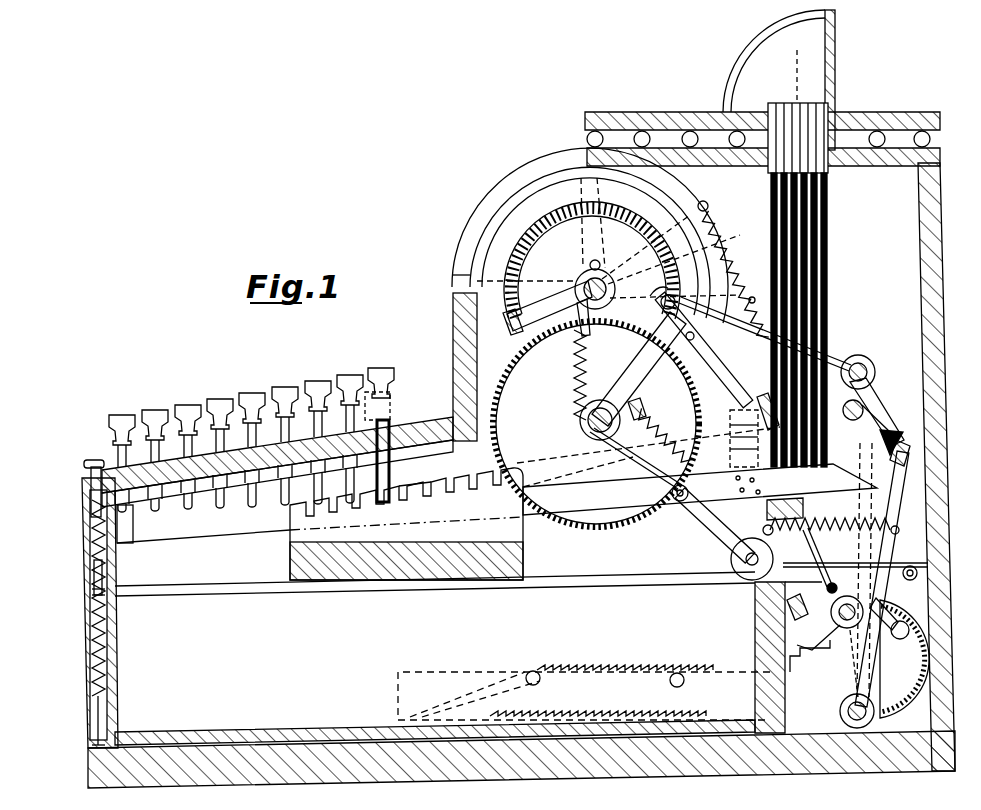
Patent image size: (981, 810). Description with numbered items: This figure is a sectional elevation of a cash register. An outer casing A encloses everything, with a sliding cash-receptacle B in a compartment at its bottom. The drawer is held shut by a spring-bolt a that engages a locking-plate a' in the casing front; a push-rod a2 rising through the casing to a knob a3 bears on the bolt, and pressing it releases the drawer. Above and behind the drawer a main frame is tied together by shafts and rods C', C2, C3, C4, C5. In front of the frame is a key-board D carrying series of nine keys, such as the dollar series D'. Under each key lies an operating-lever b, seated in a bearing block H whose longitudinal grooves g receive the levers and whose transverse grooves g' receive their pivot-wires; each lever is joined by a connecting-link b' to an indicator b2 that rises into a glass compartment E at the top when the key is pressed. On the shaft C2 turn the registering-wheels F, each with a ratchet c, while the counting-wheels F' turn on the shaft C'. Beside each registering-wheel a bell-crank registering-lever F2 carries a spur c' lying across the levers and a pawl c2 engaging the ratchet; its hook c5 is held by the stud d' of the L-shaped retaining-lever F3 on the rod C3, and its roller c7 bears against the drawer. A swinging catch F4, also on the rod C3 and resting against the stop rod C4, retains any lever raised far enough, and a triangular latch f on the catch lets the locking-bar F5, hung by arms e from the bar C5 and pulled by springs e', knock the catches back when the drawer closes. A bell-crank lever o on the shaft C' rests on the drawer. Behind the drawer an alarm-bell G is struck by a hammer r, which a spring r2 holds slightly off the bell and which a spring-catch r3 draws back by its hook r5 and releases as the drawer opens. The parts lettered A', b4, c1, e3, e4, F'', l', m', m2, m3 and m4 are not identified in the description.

The outer casing A is at (503, 450).
The drum casing A' is at (585, 294).
The spring-bolt a is at (81, 617).
The locking-plate a' is at (70, 594).
The push-rod a2 is at (92, 560).
The knob or handle a3 is at (84, 466).
The cash-receptacle B is at (584, 669).
The operating-levers b is at (497, 503).
The connecting-links b' is at (797, 320).
The indicators b2 is at (812, 96).
The rack b4 is at (744, 441).
The shaft C' is at (546, 243).
The shaft C2 is at (580, 420).
The rod C3 is at (872, 393).
The stop rod C4 is at (864, 408).
The transverse bar C5 is at (840, 712).
The ratchet c is at (596, 439).
The projecting spur c' is at (680, 347).
The lever pivot c1 is at (684, 503).
The pawl c2 is at (835, 612).
The hook-shaped projection c5 is at (656, 299).
The roller c7 is at (730, 560).
The key-board D is at (277, 453).
The series of keys D' is at (251, 437).
The projecting stud d' is at (734, 365).
The compartment E is at (828, 50).
The arms e is at (934, 574).
The springs e' is at (750, 406).
The spring e3 is at (660, 432).
The spring e4 is at (575, 372).
The registering-wheels F is at (639, 369).
The counting-wheels F' is at (855, 570).
The arm F'' is at (671, 256).
The bell-crank registering-lever F2 is at (612, 450).
The L-shaped retaining-lever F3 is at (765, 334).
The swinging catch F4 is at (886, 417).
The locking-bar F5 is at (912, 455).
The triangular latch f is at (906, 440).
The alarm-bell G is at (904, 659).
The longitudinal grooves g is at (387, 561).
The transverse grooves g' is at (437, 467).
The supporting or bearing block H is at (406, 524).
The toothed ring l' is at (592, 260).
The pin m' is at (568, 277).
The arm m2 is at (549, 306).
The pawl m3 is at (569, 323).
The weight m4 is at (510, 335).
The bell-crank lever o is at (708, 208).
The hammer r is at (818, 637).
The spring r2 is at (820, 560).
The spring-catch r3 is at (810, 656).
The hook projection r5 is at (844, 663).